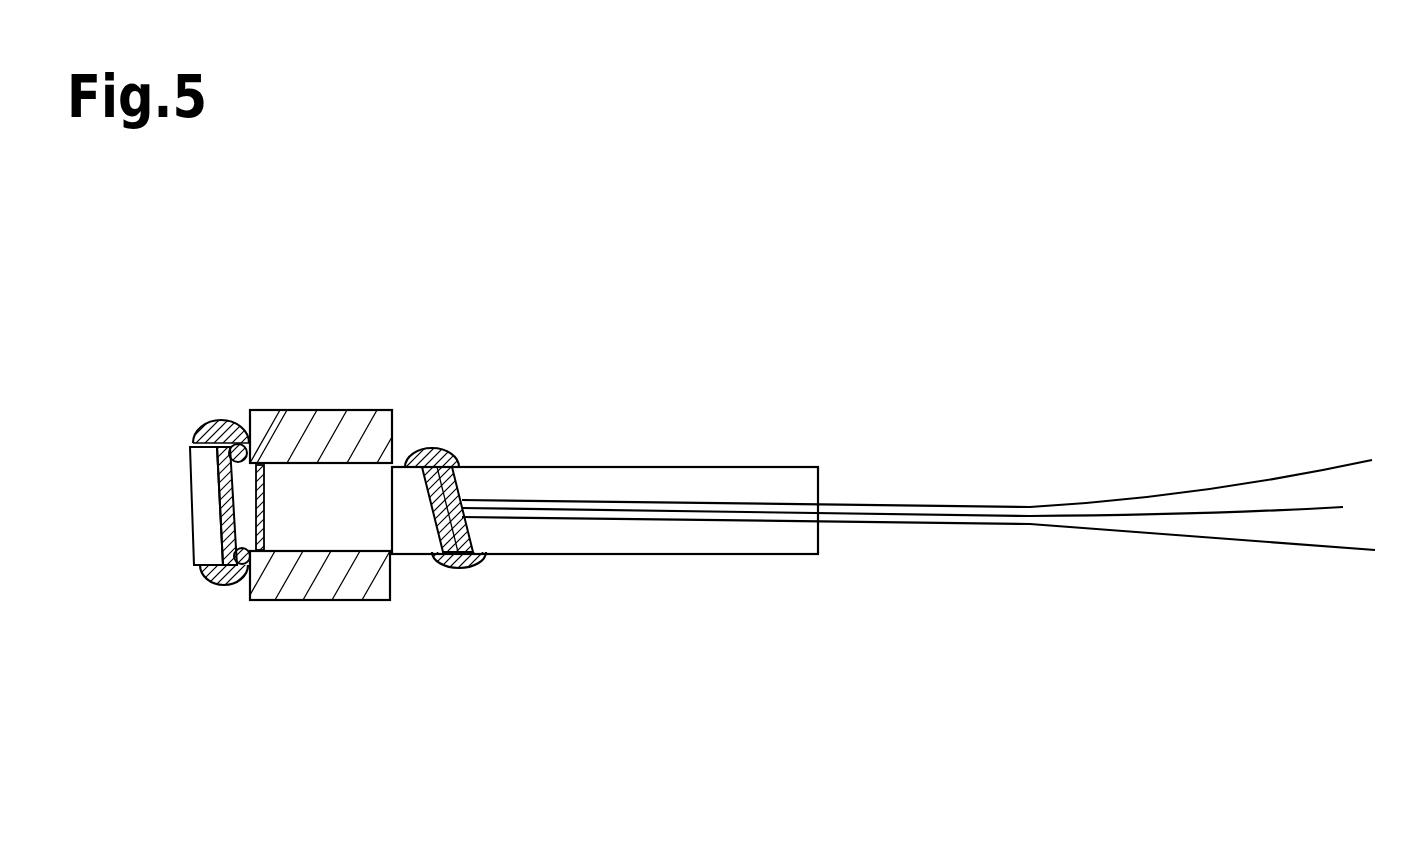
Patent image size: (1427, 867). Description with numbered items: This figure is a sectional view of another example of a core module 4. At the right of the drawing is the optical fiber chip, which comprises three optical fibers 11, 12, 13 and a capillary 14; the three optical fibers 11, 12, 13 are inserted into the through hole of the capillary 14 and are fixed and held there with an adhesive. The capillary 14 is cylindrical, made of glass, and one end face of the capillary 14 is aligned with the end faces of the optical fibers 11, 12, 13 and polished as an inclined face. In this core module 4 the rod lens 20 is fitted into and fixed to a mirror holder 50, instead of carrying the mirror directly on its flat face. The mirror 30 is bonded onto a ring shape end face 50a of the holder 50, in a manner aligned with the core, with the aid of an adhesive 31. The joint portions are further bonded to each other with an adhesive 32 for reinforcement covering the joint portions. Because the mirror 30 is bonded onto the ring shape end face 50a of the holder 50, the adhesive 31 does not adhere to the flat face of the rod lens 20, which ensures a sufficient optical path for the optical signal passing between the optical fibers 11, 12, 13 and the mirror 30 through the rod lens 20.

The core module 4 is at (725, 425).
The optical fiber 11 is at (1228, 537).
The optical fiber 12 is at (1198, 490).
The optical fiber 13 is at (1325, 507).
The capillary 14 is at (522, 478).
The rod lens 20 is at (336, 475).
The mirror 30 is at (203, 502).
The adhesive 31 is at (238, 586).
The adhesive 32 is at (200, 587).
The mirror holder 50 is at (320, 597).
The ring shape end face 50a is at (243, 418).